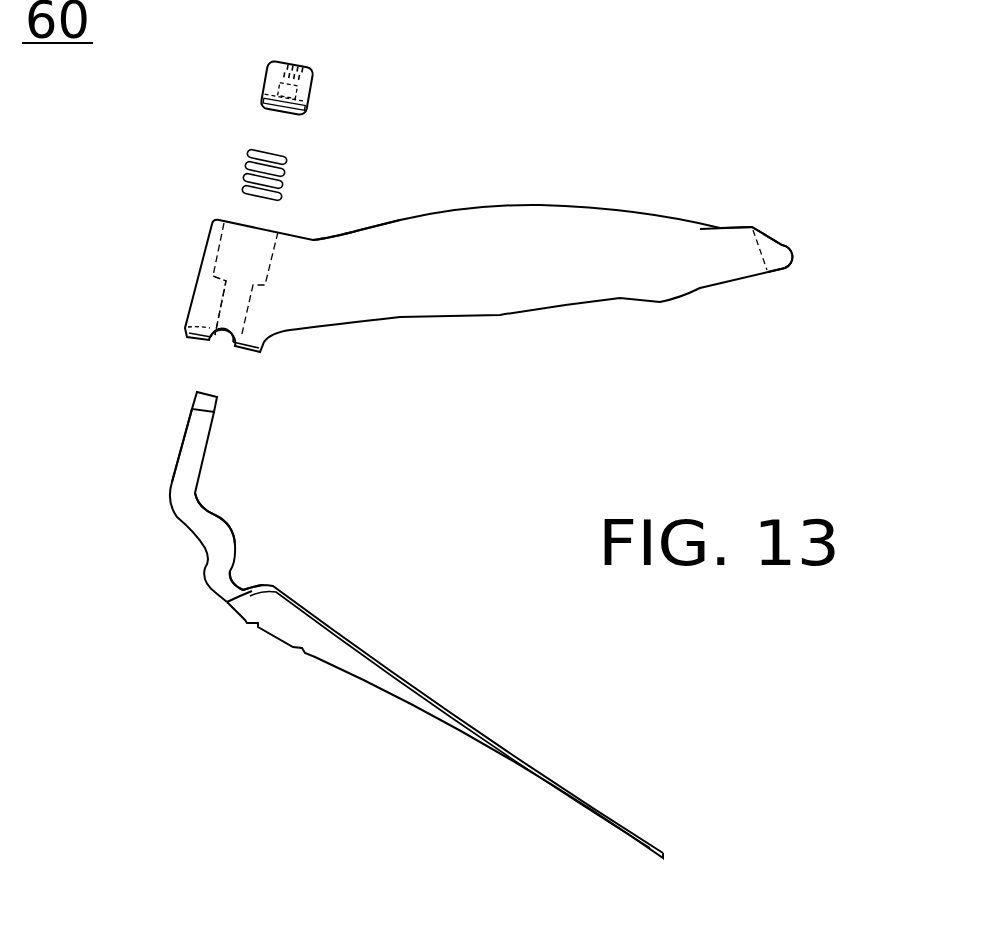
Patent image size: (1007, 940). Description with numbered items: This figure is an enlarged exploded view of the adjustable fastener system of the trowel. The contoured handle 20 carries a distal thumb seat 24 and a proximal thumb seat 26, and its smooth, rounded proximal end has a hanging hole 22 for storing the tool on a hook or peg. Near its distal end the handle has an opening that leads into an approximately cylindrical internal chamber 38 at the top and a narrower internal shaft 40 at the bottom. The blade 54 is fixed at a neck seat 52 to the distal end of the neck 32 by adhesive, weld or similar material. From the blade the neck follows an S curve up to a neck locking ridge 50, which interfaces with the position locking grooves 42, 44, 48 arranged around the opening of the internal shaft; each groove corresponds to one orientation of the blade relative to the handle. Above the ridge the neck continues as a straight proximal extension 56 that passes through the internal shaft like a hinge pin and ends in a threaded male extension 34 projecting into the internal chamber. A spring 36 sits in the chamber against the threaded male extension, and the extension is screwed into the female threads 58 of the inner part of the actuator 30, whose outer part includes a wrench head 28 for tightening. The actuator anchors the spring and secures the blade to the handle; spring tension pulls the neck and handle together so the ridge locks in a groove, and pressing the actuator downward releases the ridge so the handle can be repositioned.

The handle 20 is at (488, 305).
The hanging hole 22 is at (816, 236).
The distal thumb seat 24 is at (359, 212).
The proximal thumb seat 26 is at (750, 216).
The wrench head 28 is at (331, 51).
The actuator 30 is at (254, 72).
The neck 32 is at (167, 505).
The threaded male extension 34 is at (162, 414).
The spring 36 is at (236, 175).
The internal chamber 38 is at (201, 275).
The internal shaft 40 is at (162, 305).
The position locking groove 42 is at (163, 359).
The position locking groove 44 is at (262, 389).
The position locking groove 48 is at (297, 381).
The neck locking ridge 50 is at (246, 505).
The neck seat 52 is at (272, 555).
The blade 54 is at (445, 721).
The proximal extension 56 is at (144, 445).
The female threads 58 is at (308, 129).